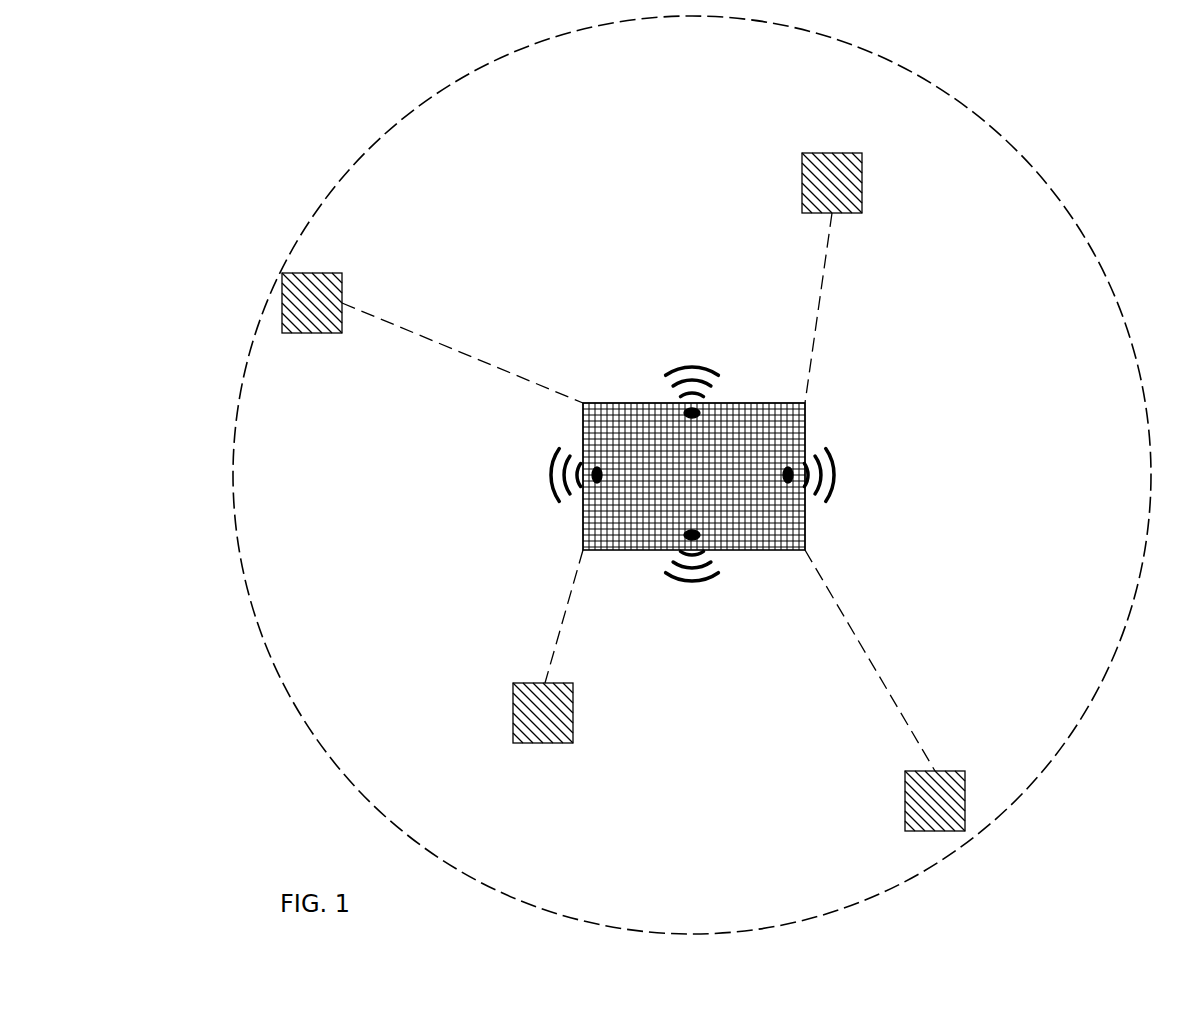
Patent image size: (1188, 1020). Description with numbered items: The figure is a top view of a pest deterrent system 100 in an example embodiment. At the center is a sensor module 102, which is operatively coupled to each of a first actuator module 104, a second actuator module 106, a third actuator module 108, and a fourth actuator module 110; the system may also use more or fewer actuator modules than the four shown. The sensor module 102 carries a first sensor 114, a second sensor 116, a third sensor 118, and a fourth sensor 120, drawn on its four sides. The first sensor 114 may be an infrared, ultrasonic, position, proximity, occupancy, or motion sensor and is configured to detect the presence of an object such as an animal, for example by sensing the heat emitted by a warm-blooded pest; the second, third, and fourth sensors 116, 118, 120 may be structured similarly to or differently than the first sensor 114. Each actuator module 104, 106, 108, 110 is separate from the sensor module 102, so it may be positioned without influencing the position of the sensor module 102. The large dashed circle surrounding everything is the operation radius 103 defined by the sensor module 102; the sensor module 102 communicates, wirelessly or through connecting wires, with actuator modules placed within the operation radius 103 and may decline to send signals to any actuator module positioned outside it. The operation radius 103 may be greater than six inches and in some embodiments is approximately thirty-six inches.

The pest deterrent system 100 is at (282, 132).
The sensor module 102 is at (578, 428).
The operation radius 103 is at (232, 478).
The first actuator module 104 is at (275, 300).
The second actuator module 106 is at (798, 172).
The third actuator module 108 is at (968, 770).
The fourth actuator module 110 is at (510, 690).
The first sensor 114 is at (668, 392).
The second sensor 116 is at (812, 448).
The third sensor 118 is at (720, 556).
The fourth sensor 120 is at (580, 497).